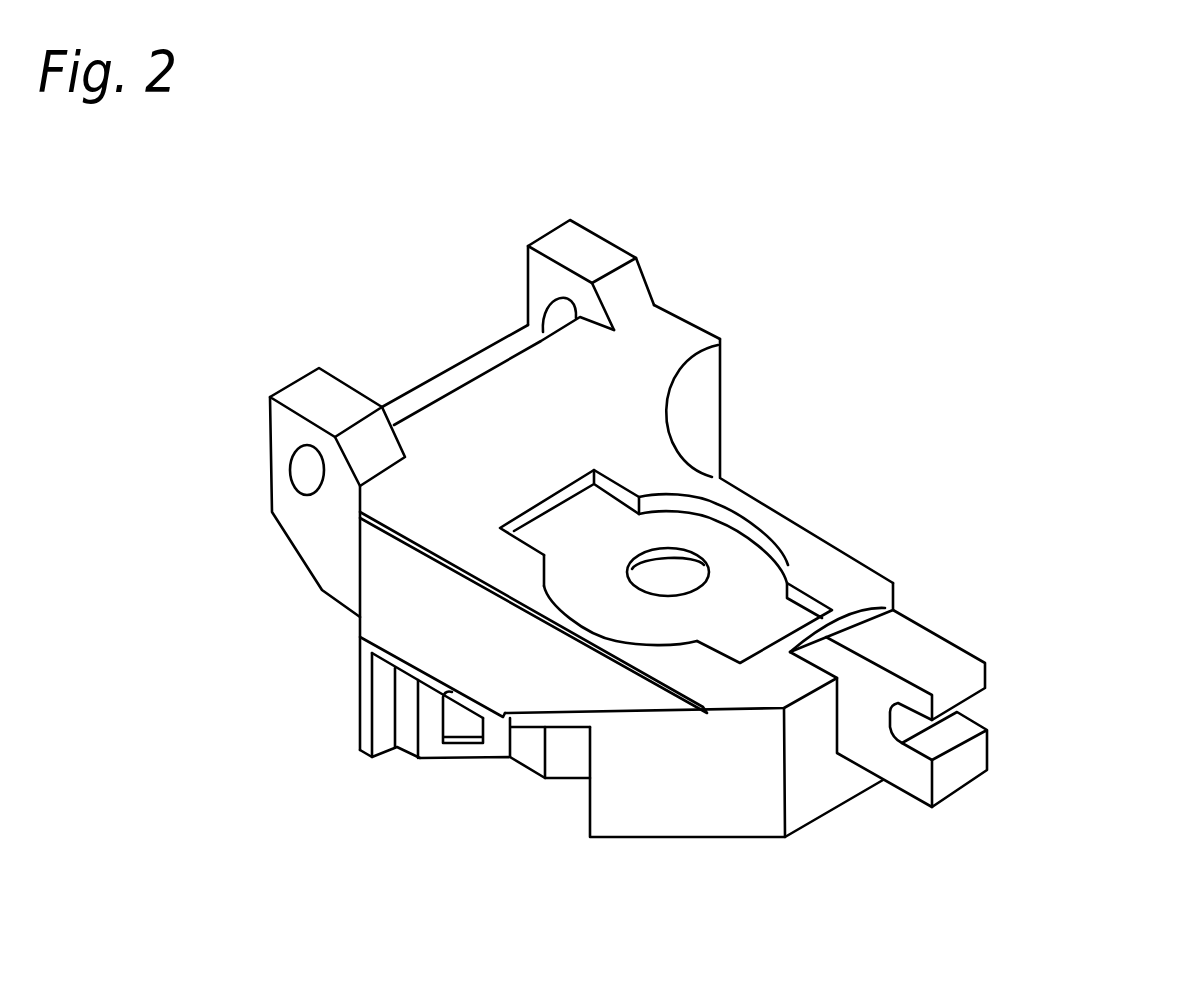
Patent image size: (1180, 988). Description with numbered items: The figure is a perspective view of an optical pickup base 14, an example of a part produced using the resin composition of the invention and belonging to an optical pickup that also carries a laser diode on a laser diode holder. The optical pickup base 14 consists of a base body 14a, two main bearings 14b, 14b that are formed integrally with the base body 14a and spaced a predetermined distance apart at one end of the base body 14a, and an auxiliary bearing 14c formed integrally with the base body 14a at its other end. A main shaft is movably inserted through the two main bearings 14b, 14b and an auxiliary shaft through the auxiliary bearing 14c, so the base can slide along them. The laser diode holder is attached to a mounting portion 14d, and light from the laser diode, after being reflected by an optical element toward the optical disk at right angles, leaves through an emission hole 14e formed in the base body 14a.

The optical pickup base 14 is at (762, 269).
The base body 14a is at (637, 438).
The main bearings 14b is at (306, 390).
The auxiliary bearing 14c is at (943, 672).
The mounting portion for the laser diode holder 14d is at (465, 722).
The emission hole 14e is at (679, 575).